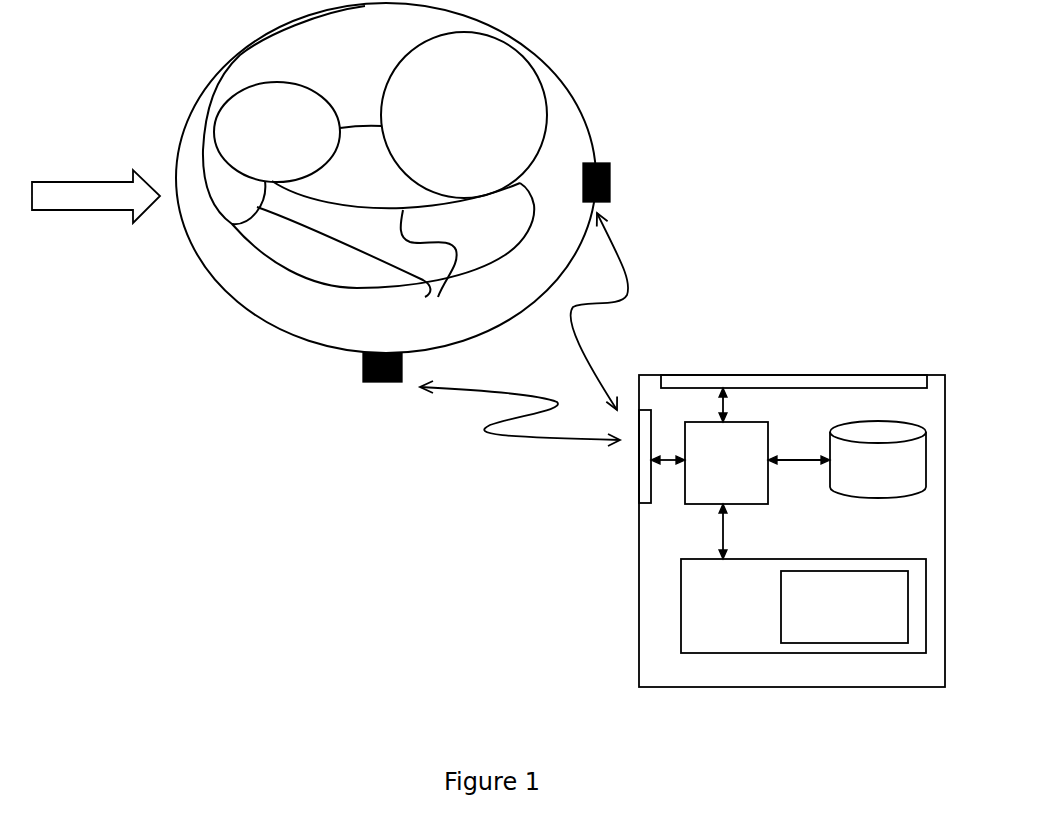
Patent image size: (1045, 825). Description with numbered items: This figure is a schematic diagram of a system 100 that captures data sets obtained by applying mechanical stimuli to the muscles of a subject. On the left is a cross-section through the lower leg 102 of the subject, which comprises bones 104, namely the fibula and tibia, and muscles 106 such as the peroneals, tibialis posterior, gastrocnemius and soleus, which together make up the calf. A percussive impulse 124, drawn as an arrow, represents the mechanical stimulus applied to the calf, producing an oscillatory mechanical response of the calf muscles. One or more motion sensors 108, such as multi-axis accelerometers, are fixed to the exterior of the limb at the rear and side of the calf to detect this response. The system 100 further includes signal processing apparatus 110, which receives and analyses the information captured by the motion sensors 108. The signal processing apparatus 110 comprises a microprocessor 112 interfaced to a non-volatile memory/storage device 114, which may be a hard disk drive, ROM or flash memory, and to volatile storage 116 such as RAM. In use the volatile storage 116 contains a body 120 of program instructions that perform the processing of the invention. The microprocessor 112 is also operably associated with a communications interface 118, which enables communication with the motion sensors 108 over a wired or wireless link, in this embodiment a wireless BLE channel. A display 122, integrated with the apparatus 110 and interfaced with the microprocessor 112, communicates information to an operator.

The system 100 is at (778, 126).
The lower leg 102 is at (248, 313).
The bones 104 is at (383, 73).
The muscles 106 is at (383, 288).
The motion sensors 108 is at (610, 165).
The signal processing apparatus 110 is at (743, 687).
The microprocessor 112 is at (708, 473).
The non-volatile memory/storage device 114 is at (859, 473).
The volatile storage 116 is at (707, 638).
The communications interface 118 is at (642, 470).
The body of program instructions 120 is at (849, 631).
The display 122 is at (860, 375).
The percussive impulse 124 is at (62, 181).